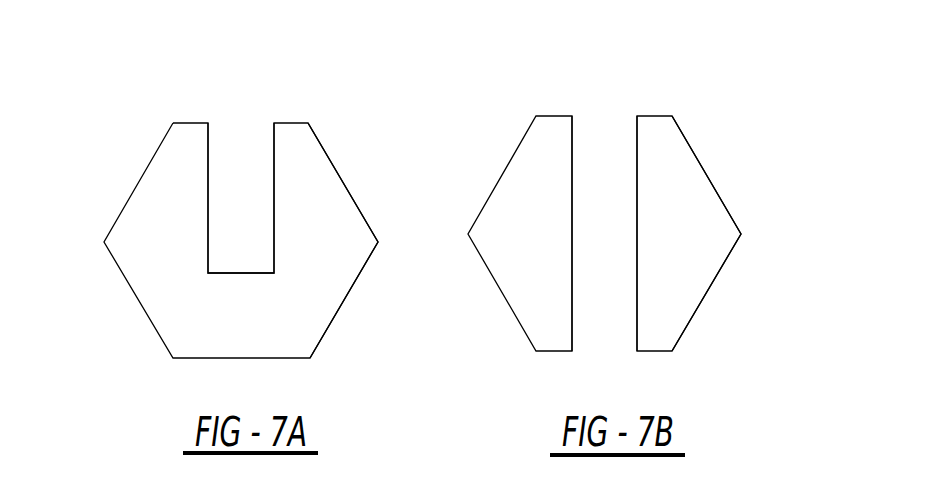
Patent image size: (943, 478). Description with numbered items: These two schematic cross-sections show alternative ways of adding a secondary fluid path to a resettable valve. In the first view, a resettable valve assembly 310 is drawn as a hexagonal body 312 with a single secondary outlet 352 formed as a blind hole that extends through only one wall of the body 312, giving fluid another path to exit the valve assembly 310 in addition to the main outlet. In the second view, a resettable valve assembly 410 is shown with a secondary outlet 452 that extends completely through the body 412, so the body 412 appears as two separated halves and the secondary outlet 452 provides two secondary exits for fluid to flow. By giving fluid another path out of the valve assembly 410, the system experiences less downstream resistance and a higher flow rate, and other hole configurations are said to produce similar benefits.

In FIG. 7A, the resettable valve assembly 310 is at (116, 137).
In FIG. 7A, the secondary outlet 352 is at (272, 153).
In FIG. 7A, the body 312 is at (323, 188).
In FIG. 7B, the resettable valve assembly 410 is at (730, 108).
In FIG. 7B, the secondary outlet 452 is at (635, 168).
In FIG. 7B, the body 412 is at (697, 270).